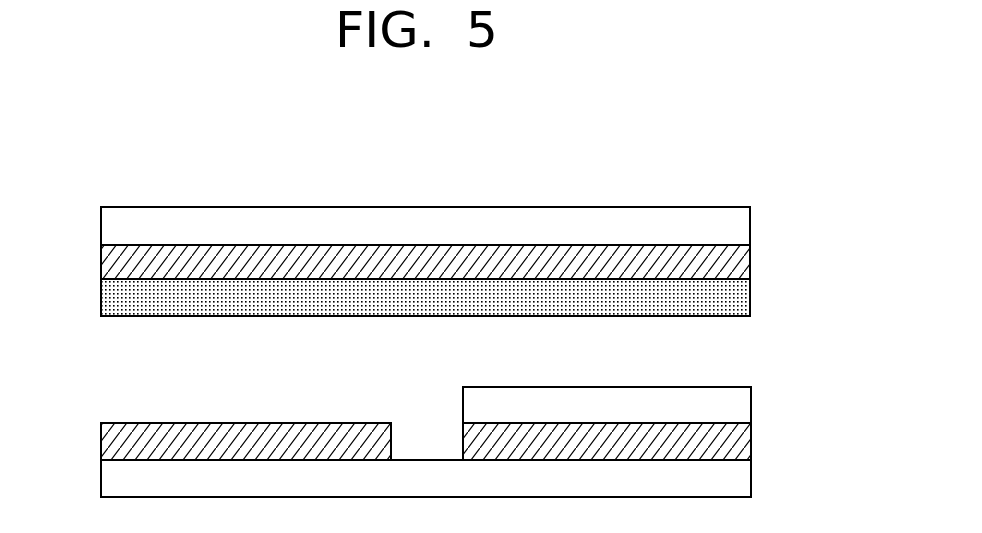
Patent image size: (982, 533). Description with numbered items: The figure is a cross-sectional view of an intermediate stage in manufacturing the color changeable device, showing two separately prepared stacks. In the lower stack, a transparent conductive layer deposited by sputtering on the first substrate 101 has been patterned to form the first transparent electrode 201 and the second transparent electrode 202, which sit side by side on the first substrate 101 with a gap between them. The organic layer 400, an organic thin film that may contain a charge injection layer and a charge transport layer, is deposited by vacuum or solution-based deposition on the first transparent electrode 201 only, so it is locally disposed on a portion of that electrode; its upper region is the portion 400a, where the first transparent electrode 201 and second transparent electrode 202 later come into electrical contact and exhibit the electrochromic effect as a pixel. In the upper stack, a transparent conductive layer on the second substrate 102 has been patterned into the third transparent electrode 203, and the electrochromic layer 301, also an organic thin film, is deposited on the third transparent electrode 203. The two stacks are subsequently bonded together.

The first substrate 101 is at (740, 476).
The second substrate 102 is at (740, 221).
The first transparent electrode 201 is at (740, 440).
The second transparent electrode 202 is at (108, 440).
The third transparent electrode 203 is at (740, 260).
The electrochromic layer 301 is at (740, 298).
The organic layer 400 is at (740, 403).
The portion of organic layer 400a is at (717, 387).